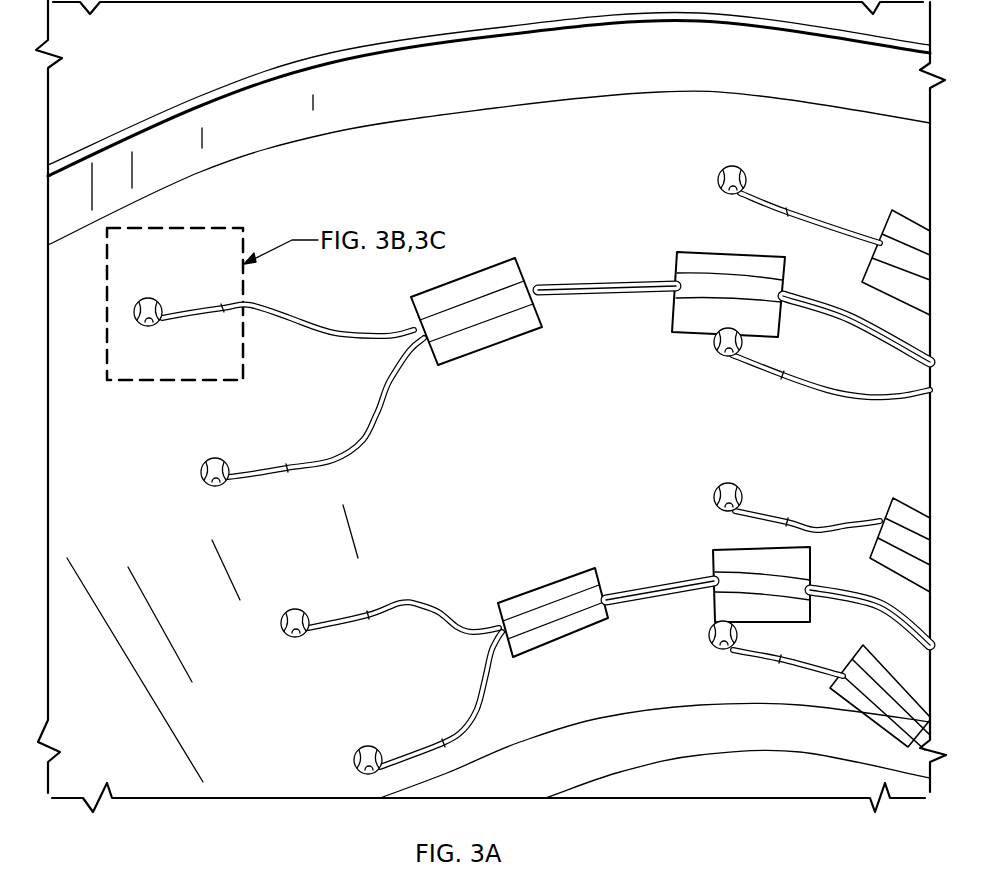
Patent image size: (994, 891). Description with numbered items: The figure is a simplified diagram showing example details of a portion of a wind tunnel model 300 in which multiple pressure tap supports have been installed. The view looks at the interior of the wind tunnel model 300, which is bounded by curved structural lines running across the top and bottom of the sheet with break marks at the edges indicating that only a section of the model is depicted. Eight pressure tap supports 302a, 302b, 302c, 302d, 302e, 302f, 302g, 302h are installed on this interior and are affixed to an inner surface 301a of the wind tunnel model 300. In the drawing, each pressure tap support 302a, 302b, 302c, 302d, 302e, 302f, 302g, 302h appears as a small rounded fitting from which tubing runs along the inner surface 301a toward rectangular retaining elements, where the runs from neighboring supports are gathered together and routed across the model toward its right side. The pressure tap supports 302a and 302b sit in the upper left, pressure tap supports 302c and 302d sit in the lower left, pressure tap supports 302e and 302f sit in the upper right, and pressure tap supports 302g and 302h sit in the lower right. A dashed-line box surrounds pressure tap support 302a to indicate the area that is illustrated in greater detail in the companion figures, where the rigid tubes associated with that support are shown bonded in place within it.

The wind tunnel model 300 is at (184, 80).
The inner surface 301a is at (336, 406).
The pressure tap support 302a is at (150, 297).
The pressure tap support 302b is at (200, 470).
The pressure tap support 302c is at (281, 630).
The pressure tap support 302d is at (354, 766).
The pressure tap support 302e is at (718, 180).
The pressure tap support 302f is at (714, 342).
The pressure tap support 302g is at (714, 493).
The pressure tap support 302h is at (709, 634).